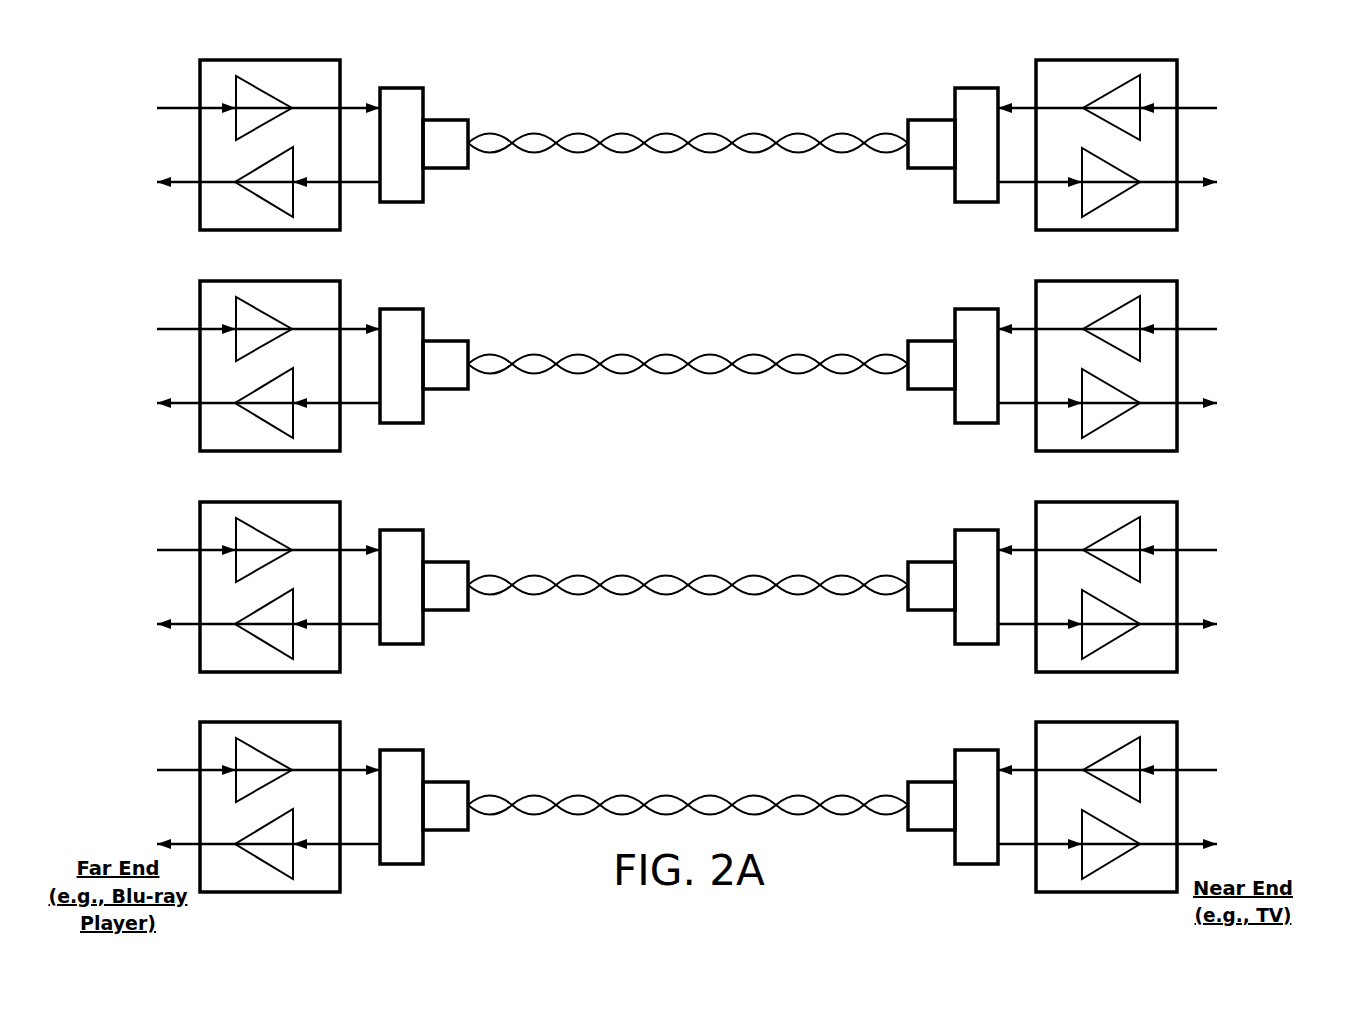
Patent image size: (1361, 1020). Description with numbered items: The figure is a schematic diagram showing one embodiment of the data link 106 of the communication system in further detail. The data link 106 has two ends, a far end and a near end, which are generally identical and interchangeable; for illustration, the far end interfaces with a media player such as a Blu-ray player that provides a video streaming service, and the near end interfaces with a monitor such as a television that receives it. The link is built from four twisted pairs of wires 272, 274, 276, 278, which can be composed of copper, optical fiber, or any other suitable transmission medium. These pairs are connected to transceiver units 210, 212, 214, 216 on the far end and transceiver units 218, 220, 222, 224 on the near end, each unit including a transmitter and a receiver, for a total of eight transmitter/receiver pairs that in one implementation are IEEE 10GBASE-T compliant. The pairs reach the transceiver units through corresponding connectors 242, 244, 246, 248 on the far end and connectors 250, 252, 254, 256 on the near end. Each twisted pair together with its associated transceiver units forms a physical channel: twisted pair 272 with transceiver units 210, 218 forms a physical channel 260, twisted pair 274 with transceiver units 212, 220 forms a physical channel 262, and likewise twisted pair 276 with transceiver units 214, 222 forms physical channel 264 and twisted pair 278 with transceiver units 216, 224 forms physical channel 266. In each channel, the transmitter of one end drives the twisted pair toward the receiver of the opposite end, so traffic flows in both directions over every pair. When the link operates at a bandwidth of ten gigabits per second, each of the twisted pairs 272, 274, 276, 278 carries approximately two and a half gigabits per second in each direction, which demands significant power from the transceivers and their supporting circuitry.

The data link 106 is at (599, 56).
The transceiver unit 210 is at (250, 221).
The transceiver unit 212 is at (270, 366).
The transceiver unit 214 is at (270, 587).
The transceiver unit 216 is at (270, 807).
The transceiver unit 218 is at (1169, 220).
The transceiver unit 220 is at (1106, 366).
The transceiver unit 222 is at (1106, 587).
The transceiver unit 224 is at (1106, 807).
The connector 242 is at (443, 118).
The connector 244 is at (444, 354).
The connector 246 is at (444, 575).
The connector 248 is at (444, 795).
The connector 250 is at (918, 118).
The connector 252 is at (926, 354).
The connector 254 is at (926, 575).
The connector 256 is at (926, 795).
The physical channel 260 is at (754, 145).
The physical channel 262 is at (754, 366).
The physical channel 264 is at (754, 587).
The physical channel 266 is at (754, 807).
The twisted pair of wires 272 is at (683, 136).
The twisted pair of wires 274 is at (688, 338).
The twisted pair of wires 276 is at (688, 559).
The twisted pair of wires 278 is at (688, 779).